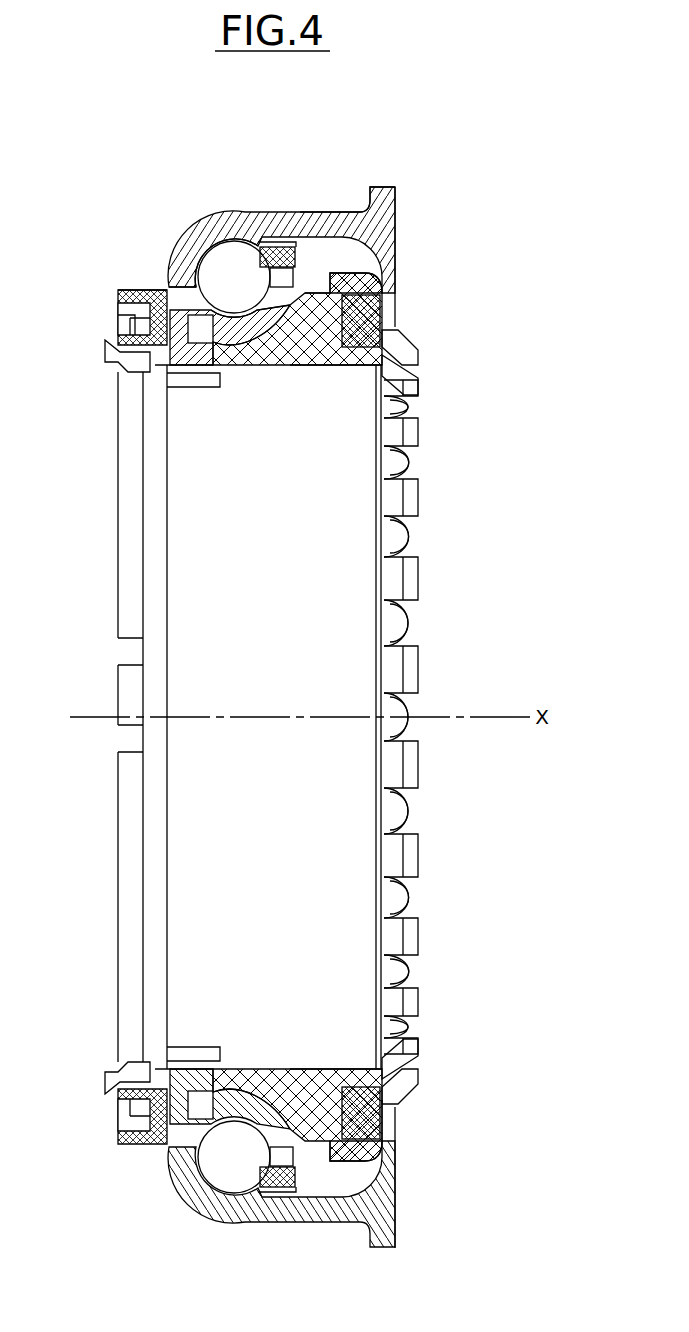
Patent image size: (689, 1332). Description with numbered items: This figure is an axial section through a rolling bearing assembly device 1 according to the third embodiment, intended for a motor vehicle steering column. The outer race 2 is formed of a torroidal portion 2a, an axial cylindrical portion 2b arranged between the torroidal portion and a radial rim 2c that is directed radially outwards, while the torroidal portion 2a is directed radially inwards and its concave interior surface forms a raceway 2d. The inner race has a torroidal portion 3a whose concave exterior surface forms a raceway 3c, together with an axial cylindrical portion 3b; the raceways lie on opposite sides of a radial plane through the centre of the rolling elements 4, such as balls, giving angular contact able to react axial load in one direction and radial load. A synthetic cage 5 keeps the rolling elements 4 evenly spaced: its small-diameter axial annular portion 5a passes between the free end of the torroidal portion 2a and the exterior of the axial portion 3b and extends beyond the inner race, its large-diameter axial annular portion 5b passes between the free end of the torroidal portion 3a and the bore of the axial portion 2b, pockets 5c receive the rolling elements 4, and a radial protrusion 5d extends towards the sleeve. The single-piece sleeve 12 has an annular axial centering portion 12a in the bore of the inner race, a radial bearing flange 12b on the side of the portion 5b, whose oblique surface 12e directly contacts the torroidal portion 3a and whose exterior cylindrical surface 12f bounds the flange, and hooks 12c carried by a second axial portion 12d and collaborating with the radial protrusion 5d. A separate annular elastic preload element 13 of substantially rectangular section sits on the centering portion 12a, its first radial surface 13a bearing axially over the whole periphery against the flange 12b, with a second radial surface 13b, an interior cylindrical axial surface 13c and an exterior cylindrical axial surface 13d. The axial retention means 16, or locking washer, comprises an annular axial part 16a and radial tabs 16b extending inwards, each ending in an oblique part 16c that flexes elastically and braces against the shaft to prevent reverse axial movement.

The rolling bearing assembly device 1 is at (450, 176).
The outer race 2 is at (287, 205).
The torroidal portion 2a is at (180, 280).
The axial portion 2b is at (345, 214).
The radial rim 2c is at (382, 186).
The raceway 2d is at (224, 255).
The torroidal portion 3a is at (268, 350).
The axial cylindrical portion 3b is at (203, 345).
The raceway 3c is at (242, 348).
The rolling elements 4 is at (229, 291).
The cage 5 is at (138, 282).
The axial annular portion of small diameter 5a is at (160, 289).
The axial annular portion of large diameter 5b is at (302, 240).
The pockets 5c is at (270, 250).
The radial protrusion 5d is at (125, 313).
The sleeve 12 is at (340, 377).
The annular axial centering portion 12a is at (412, 388).
The radial bearing flange 12b is at (382, 333).
The hooks 12c is at (115, 348).
The second axial portion 12d is at (175, 382).
The oblique surface 12e is at (318, 370).
The exterior cylindrical surface 12f is at (318, 291).
The elastic preload element 13 is at (381, 1138).
The first radial surface 13a is at (315, 1090).
The second radial surface 13b is at (383, 1118).
The interior cylindrical axial surface 13c is at (356, 1082).
The exterior cylindrical axial surface 13d is at (378, 1160).
The axial retention means 16 is at (395, 672).
The annular axial part 16a is at (345, 285).
The radial tabs 16b is at (405, 762).
The oblique part 16c is at (412, 357).